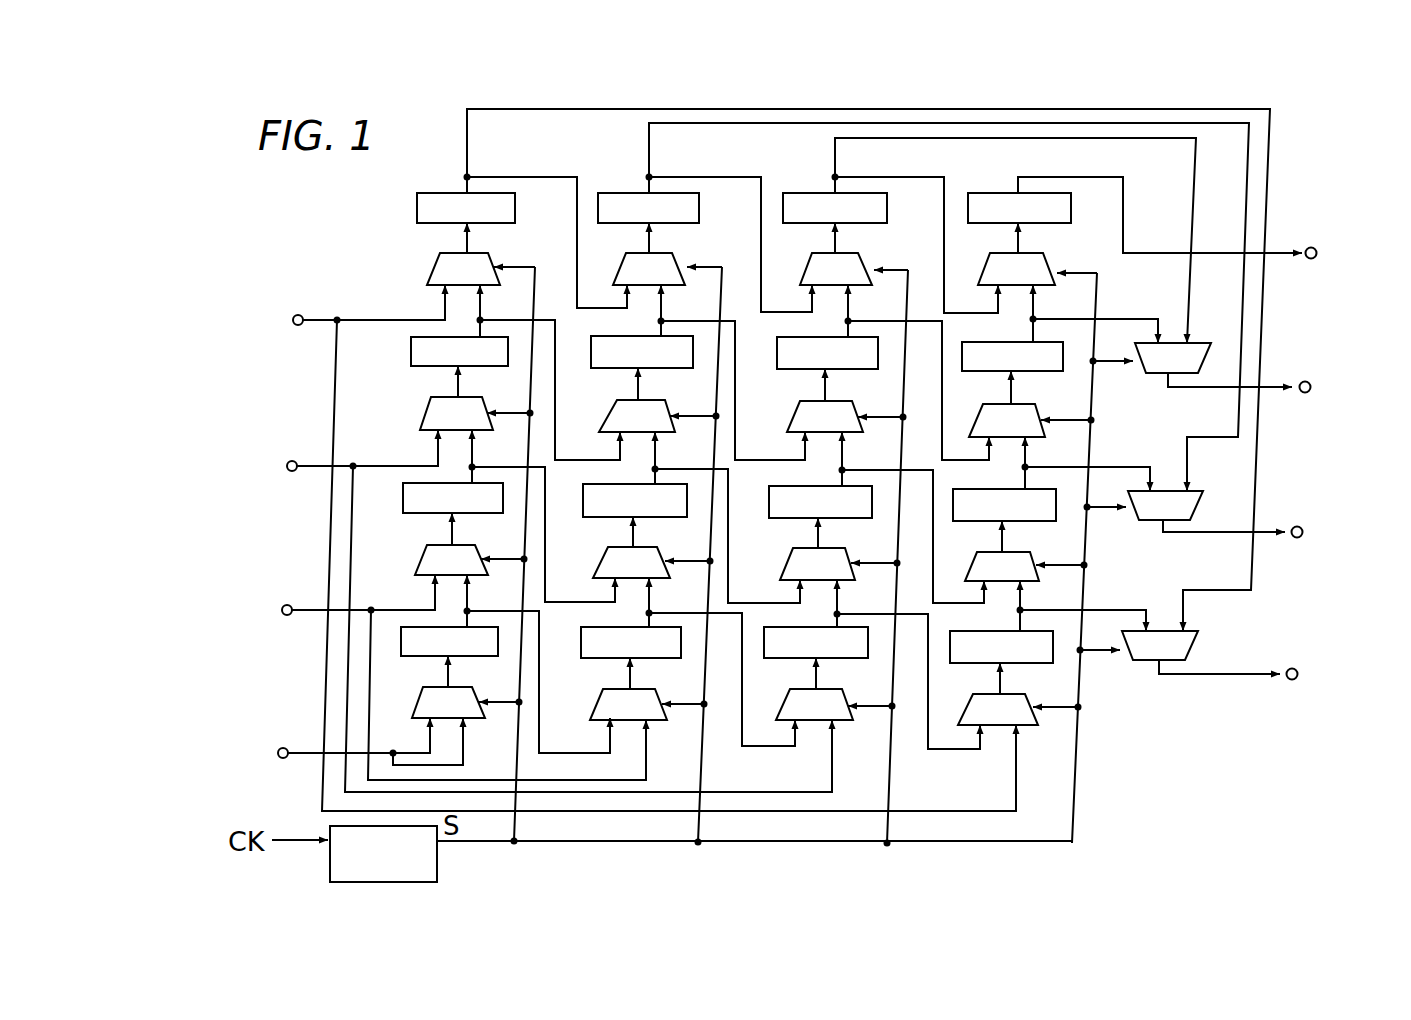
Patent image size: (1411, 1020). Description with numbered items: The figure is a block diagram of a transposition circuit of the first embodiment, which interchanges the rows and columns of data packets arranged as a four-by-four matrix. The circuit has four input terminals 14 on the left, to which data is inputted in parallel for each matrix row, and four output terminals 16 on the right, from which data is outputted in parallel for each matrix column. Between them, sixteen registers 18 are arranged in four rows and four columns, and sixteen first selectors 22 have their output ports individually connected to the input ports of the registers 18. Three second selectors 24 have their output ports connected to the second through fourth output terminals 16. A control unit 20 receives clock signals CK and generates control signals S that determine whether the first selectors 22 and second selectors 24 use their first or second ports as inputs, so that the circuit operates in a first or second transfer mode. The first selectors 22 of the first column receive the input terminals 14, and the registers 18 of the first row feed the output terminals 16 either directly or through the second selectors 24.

The input terminal 14 is at (278, 748).
The output terminal 16 is at (1313, 248).
The register 18 is at (985, 193).
The control unit 20 is at (330, 828).
The first selector 22 is at (813, 550).
The second selector 24 is at (1157, 373).